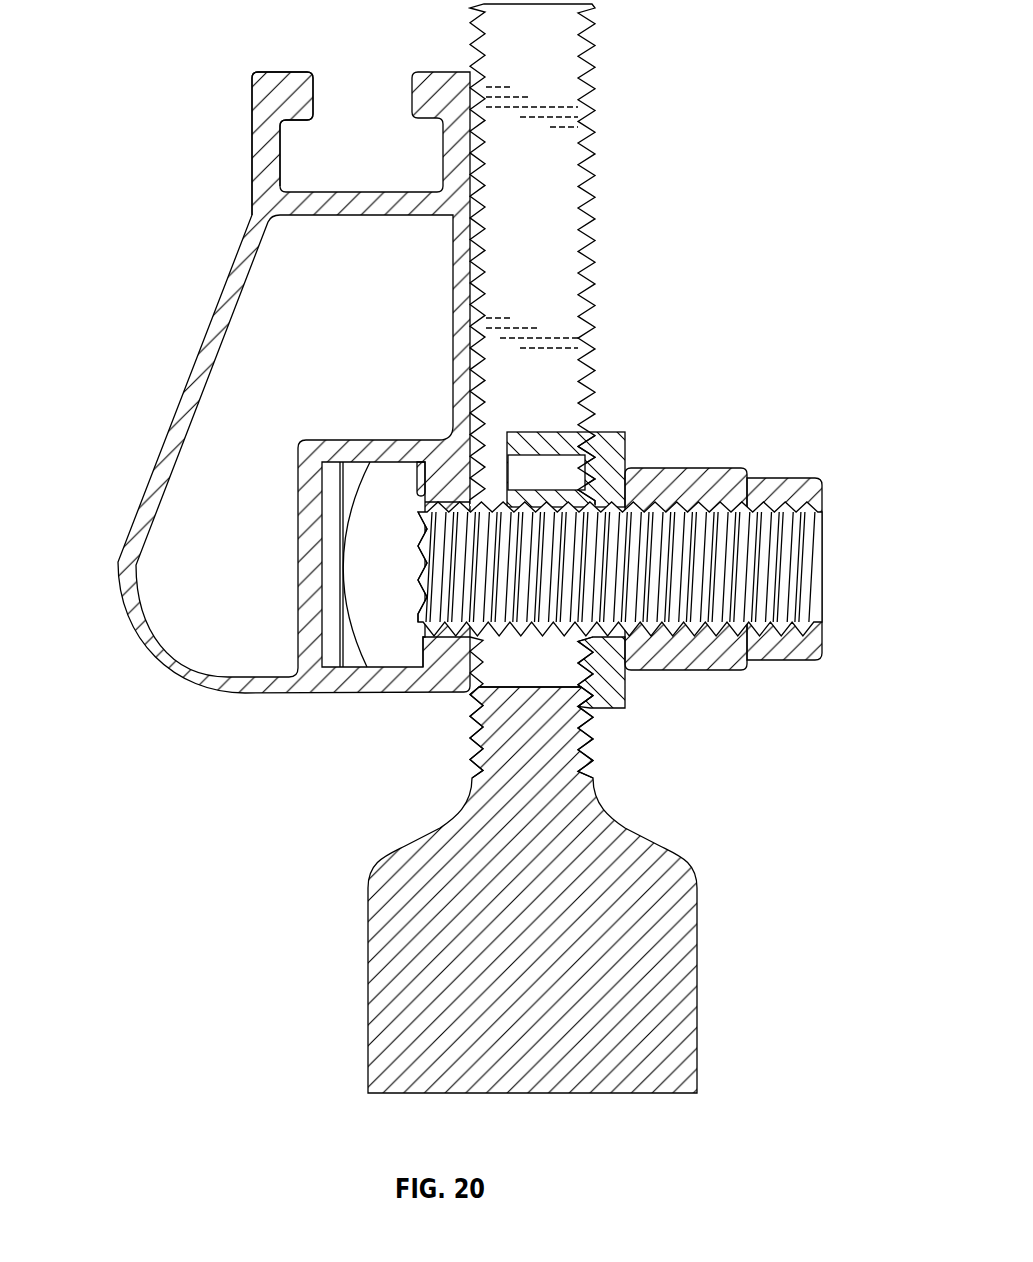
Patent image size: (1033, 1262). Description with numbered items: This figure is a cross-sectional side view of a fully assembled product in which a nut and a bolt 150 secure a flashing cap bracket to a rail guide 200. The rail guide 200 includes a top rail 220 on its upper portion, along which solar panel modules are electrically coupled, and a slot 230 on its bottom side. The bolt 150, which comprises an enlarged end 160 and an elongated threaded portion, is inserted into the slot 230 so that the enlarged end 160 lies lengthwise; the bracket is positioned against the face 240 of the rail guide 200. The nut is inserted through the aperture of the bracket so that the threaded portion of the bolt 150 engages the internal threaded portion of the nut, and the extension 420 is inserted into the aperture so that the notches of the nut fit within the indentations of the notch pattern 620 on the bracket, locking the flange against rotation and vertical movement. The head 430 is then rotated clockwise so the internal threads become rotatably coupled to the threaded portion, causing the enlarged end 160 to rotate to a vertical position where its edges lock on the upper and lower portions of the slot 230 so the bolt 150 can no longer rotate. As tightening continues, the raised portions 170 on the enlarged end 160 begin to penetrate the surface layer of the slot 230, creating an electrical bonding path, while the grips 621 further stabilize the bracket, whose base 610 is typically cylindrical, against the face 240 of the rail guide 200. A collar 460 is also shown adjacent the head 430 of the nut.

The bolt 150 is at (693, 633).
The enlarged end 160 is at (393, 655).
The raised portions 170 is at (418, 506).
The rail guide 200 is at (130, 593).
The top rail 220 is at (292, 85).
The slot 230 is at (332, 662).
The face 240 is at (458, 693).
The extension 420 is at (603, 433).
The head 430 is at (795, 478).
The collar 460 is at (688, 468).
The base 610 is at (697, 1013).
The notch pattern 620 is at (588, 748).
The grips 621 is at (475, 742).